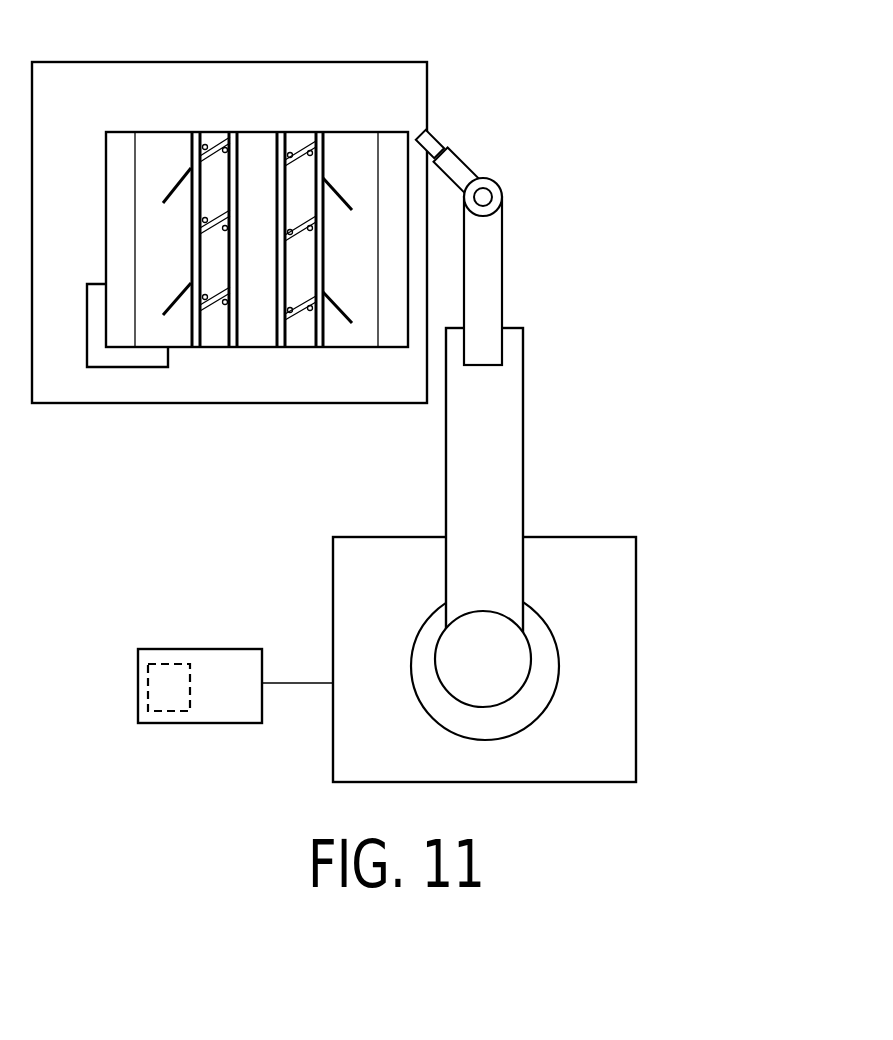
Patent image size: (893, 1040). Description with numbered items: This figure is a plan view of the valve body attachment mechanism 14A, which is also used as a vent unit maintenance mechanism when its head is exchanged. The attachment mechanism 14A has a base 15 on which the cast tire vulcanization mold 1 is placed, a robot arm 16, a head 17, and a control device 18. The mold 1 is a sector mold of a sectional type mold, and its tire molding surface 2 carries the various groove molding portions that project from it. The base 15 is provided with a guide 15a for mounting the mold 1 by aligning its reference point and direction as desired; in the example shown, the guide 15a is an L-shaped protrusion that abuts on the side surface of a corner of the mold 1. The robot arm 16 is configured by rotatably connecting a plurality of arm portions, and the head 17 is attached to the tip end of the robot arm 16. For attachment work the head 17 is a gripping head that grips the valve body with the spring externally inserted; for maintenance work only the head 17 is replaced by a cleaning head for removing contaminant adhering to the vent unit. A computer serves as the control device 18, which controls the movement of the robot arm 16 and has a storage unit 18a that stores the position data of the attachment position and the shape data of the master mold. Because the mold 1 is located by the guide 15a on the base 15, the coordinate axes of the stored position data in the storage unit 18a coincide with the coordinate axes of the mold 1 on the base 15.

The tire vulcanization mold 1 is at (352, 132).
The tire molding surface 2 is at (255, 148).
The attachment mechanism 14A is at (548, 442).
The base 15 is at (248, 395).
The guide 15a is at (122, 359).
The robot arm 16 is at (497, 300).
The head 17 is at (437, 140).
The control device 18 is at (222, 663).
The storage unit 18a is at (168, 673).